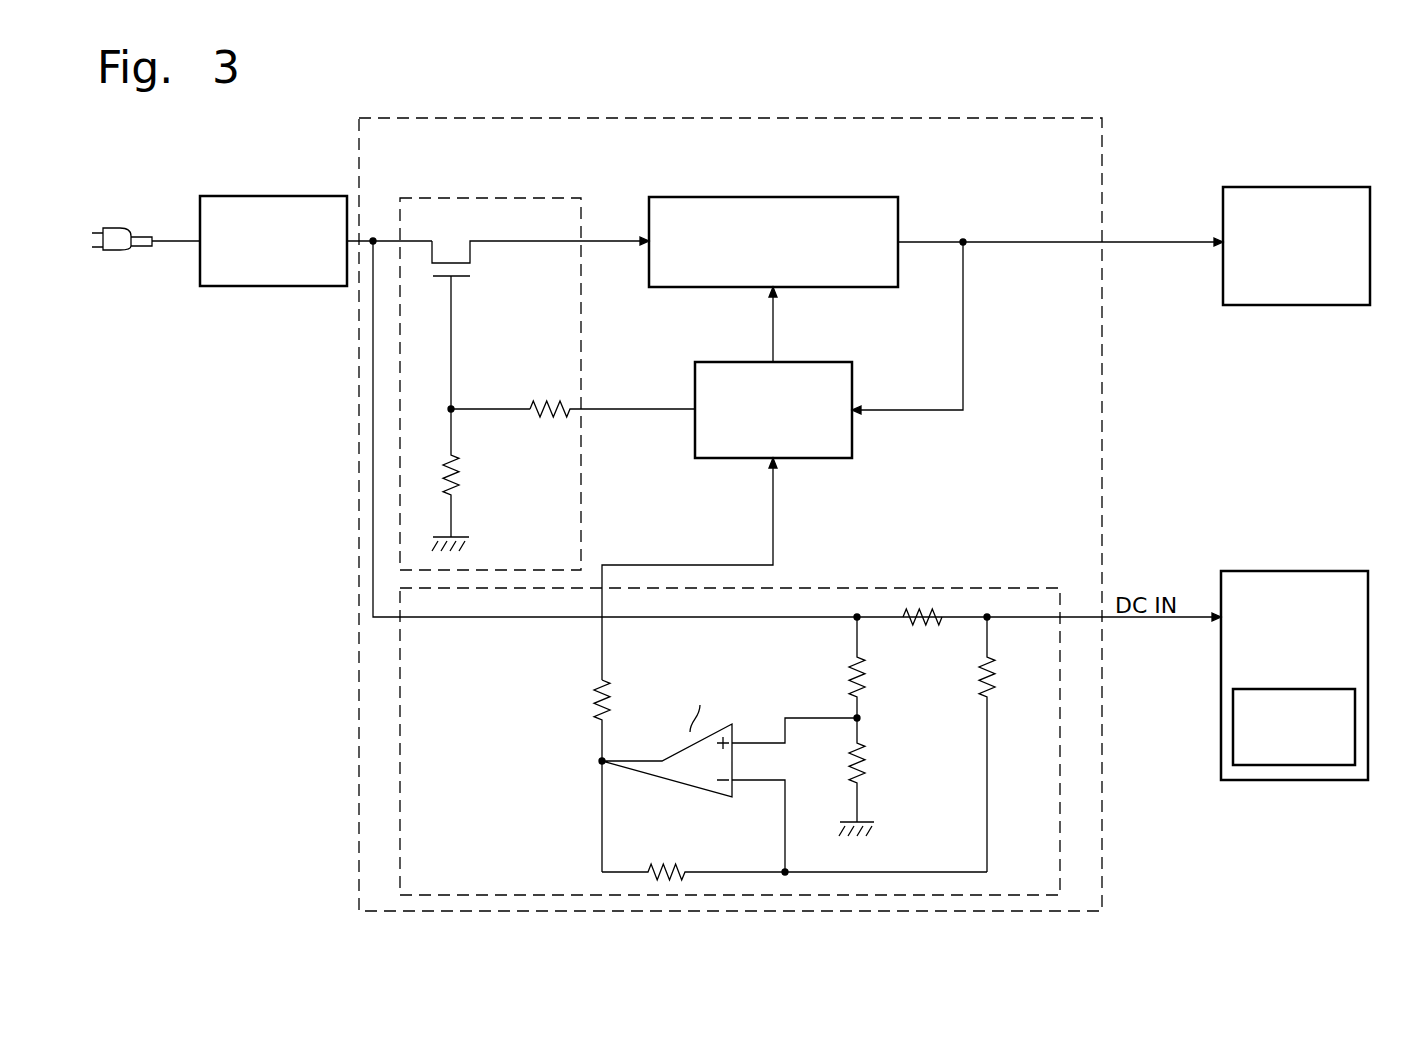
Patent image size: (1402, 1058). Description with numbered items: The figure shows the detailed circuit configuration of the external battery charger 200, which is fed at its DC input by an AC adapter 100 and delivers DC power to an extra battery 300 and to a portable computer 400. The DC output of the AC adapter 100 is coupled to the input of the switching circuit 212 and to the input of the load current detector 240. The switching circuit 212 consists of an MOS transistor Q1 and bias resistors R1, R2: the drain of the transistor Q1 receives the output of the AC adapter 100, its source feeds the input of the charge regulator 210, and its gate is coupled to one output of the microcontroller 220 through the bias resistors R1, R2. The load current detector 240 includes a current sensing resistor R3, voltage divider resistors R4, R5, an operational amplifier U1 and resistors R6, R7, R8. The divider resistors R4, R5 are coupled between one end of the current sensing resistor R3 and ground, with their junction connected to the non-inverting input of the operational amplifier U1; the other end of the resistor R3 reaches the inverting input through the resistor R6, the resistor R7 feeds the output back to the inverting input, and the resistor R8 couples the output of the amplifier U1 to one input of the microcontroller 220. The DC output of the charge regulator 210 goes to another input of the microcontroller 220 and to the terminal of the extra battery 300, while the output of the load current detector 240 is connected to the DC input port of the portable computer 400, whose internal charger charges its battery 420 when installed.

The AC adapter 100 is at (265, 196).
The external battery charger 200 is at (1047, 118).
The charge regulator 210 is at (835, 197).
The switching circuit 212 is at (547, 353).
The microcontroller 220 is at (815, 362).
The load current detector 240 is at (730, 710).
The extra battery 300 is at (1325, 187).
The portable computer 400 is at (1322, 571).
The battery 420 is at (1327, 765).
The MOS transistor Q1 is at (536, 325).
The bias resistor R1 is at (573, 394).
The bias resistor R2 is at (467, 480).
The current sensing resistor R3 is at (922, 635).
The voltage divider resistor R4 is at (877, 667).
The voltage divider resistor R5 is at (872, 777).
The resistor R6 is at (1007, 744).
The resistor R7 is at (794, 856).
The resistor R8 is at (623, 776).
The operational amplifier U1 is at (729, 775).